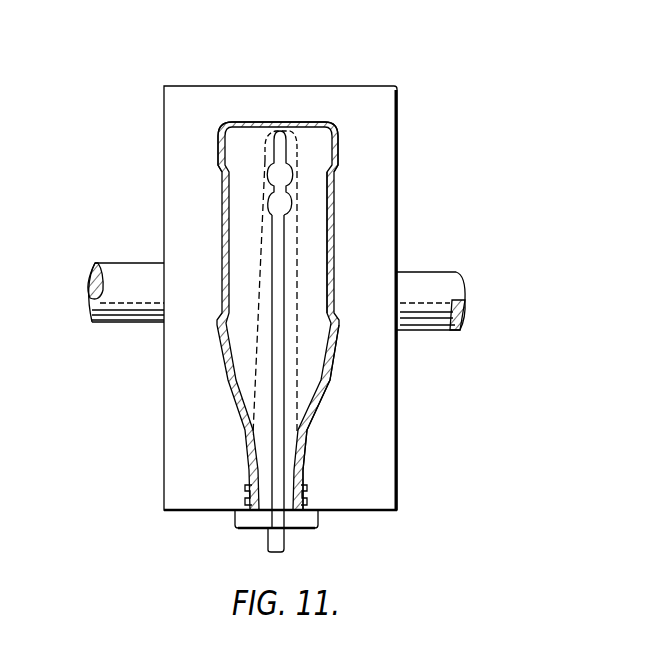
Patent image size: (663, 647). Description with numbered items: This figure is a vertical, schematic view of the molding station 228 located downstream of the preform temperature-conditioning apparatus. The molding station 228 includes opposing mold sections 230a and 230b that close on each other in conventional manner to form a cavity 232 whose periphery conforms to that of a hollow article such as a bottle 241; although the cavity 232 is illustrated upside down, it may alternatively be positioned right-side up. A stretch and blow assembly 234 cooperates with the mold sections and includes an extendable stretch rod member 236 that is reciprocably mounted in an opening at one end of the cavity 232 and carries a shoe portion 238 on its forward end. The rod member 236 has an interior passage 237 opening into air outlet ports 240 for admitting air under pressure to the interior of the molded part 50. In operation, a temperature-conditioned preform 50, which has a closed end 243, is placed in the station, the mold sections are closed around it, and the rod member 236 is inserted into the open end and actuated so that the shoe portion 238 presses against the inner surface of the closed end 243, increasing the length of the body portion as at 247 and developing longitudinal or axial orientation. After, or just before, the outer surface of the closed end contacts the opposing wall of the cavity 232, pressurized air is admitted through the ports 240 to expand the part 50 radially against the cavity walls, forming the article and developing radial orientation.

The molding station 228 is at (553, 225).
The mold section 230a is at (383, 123).
The mold section 230b is at (163, 122).
The cavity 232 is at (313, 157).
The stretch and blow assembly 234 is at (313, 256).
The stretch rod member 236 is at (273, 247).
The interior passage 237 is at (278, 233).
The shoe portion 238 is at (284, 137).
The air outlet ports 240 is at (262, 160).
The bottle 241 is at (340, 280).
The closed end 243 is at (265, 268).
The increased length of body portion 247 is at (300, 198).
The preform 50 is at (307, 382).